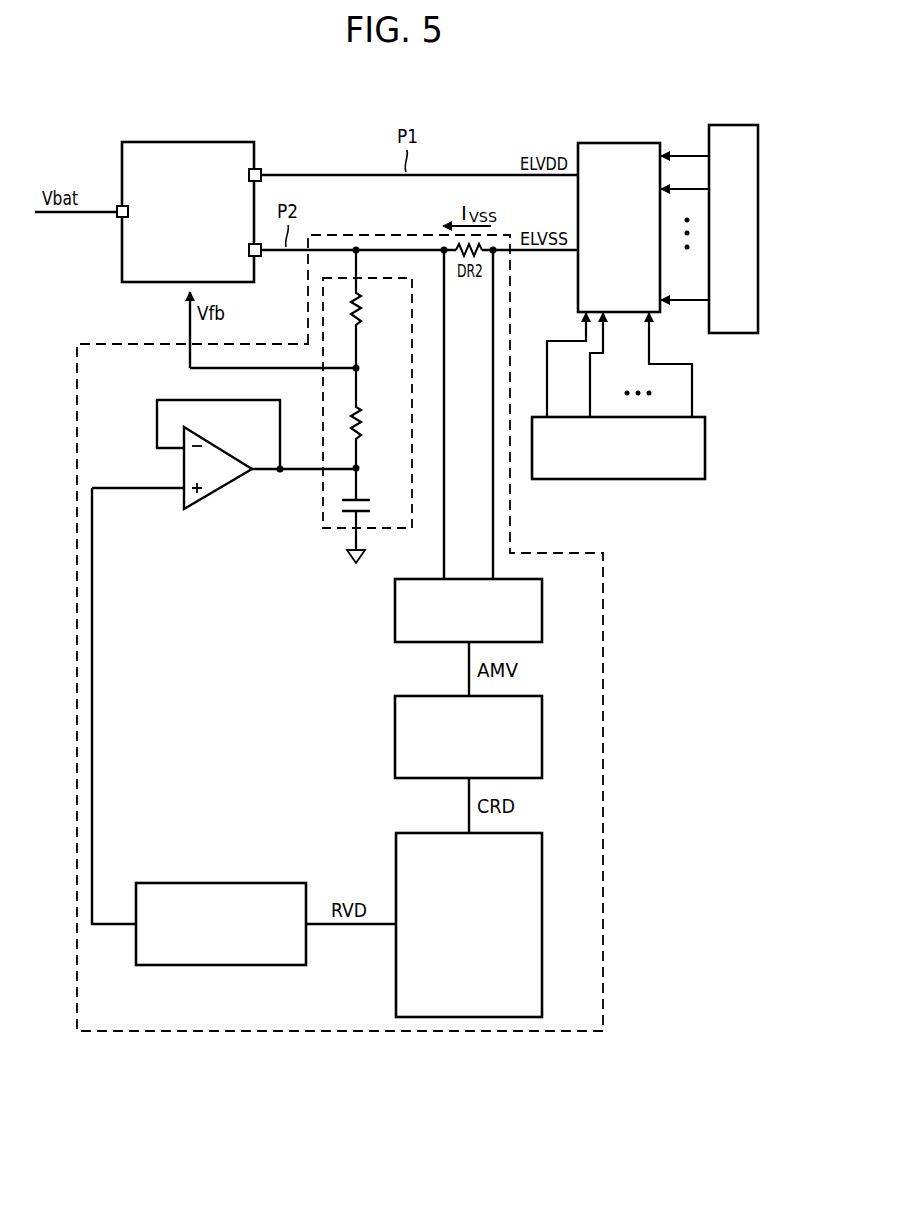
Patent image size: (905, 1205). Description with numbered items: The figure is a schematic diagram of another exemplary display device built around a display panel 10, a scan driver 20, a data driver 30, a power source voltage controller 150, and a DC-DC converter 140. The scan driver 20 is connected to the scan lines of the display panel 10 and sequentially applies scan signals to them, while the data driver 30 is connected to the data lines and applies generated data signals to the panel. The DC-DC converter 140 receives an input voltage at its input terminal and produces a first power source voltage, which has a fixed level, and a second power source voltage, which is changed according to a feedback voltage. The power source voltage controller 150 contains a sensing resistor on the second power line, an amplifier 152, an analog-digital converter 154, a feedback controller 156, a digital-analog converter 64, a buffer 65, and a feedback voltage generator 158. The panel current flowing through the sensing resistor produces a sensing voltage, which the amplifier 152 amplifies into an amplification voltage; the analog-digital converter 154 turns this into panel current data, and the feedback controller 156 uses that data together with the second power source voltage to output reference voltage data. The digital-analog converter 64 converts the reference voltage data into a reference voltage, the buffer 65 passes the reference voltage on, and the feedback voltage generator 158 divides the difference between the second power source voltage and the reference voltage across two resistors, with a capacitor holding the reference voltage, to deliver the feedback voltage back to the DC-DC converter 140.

The display panel 10 is at (619, 143).
The scan driver 20 is at (739, 125).
The data driver 30 is at (670, 480).
The digital-analog converter 64 is at (252, 883).
The buffer 65 is at (223, 493).
The DC-DC converter 140 is at (204, 141).
The power source voltage controller 150 is at (603, 807).
The amplifier 152 is at (542, 611).
The analog-digital converter 154 is at (542, 738).
The feedback controller 156 is at (542, 926).
The feedback voltage generator 158 is at (323, 514).